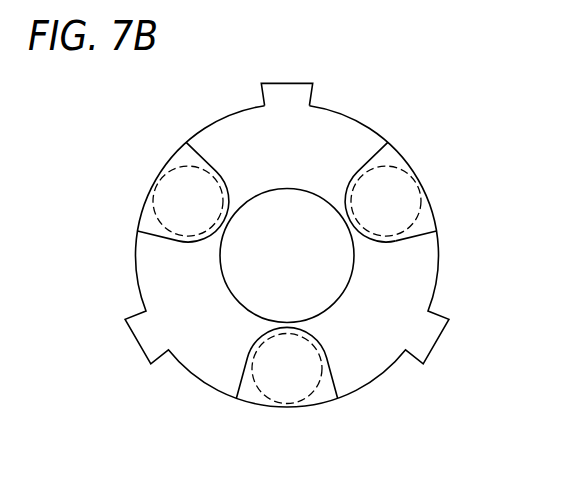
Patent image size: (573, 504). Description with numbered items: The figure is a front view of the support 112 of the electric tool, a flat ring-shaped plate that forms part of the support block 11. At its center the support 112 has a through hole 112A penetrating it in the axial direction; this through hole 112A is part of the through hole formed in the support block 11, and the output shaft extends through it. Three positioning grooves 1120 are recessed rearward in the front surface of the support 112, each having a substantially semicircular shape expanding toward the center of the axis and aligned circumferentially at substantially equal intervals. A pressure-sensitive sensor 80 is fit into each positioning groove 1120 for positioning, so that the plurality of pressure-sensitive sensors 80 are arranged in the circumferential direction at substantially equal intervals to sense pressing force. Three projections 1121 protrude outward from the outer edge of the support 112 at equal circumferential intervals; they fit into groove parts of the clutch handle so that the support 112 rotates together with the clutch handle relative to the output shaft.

The support block 11 is at (228, 128).
The projection 1121 is at (295, 87).
The support 112 is at (367, 157).
The positioning groove 1120 is at (424, 226).
The through hole 112A is at (229, 289).
The pressure-sensitive sensor 80 is at (168, 172).